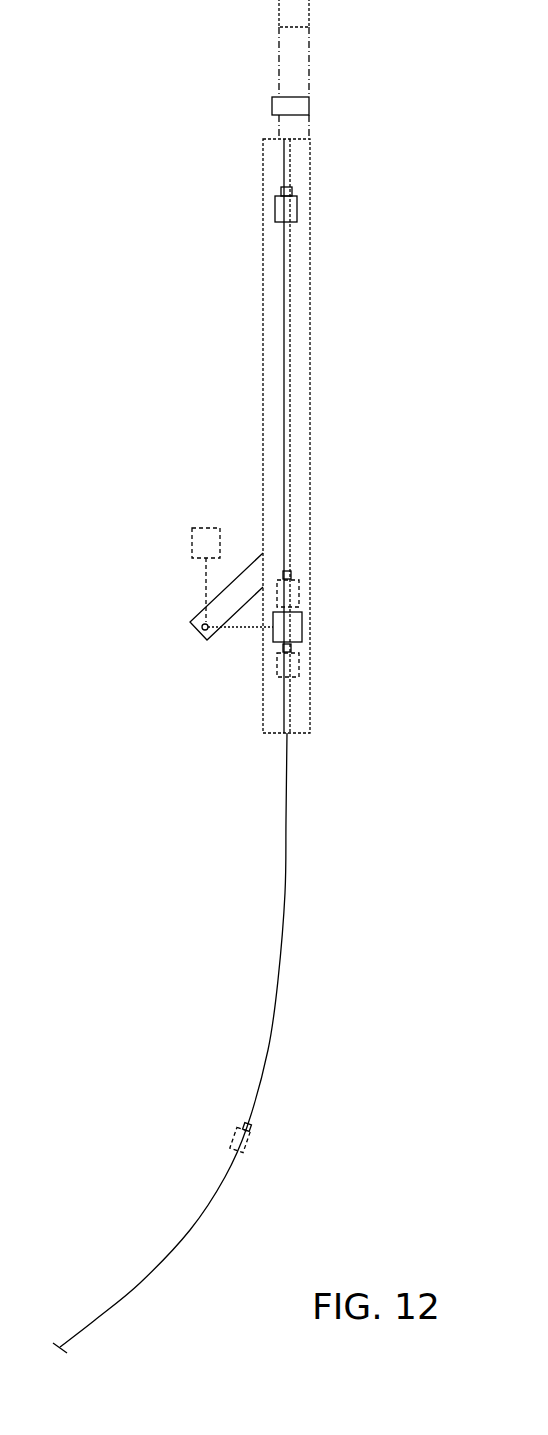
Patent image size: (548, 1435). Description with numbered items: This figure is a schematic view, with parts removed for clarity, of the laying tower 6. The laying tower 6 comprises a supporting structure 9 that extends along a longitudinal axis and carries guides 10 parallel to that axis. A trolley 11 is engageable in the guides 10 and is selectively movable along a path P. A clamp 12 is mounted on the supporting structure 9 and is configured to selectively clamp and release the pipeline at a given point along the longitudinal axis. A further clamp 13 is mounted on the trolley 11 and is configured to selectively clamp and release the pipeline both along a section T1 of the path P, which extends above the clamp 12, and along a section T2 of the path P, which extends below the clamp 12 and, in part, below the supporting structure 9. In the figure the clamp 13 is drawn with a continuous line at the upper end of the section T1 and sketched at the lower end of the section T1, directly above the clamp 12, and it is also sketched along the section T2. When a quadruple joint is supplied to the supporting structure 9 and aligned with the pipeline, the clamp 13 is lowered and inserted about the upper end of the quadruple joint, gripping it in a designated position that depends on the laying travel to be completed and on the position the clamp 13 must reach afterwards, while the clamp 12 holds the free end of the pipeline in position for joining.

The laying tower 6 is at (383, 300).
The supporting structure 9 is at (240, 390).
The guides 10 is at (290, 362).
The trolley 11 is at (281, 191).
The clamp 12 is at (204, 526).
The clamp 13 is at (311, 207).
The path P is at (300, 523).
The section of path T1 is at (287, 427).
The section of path T2 is at (286, 893).